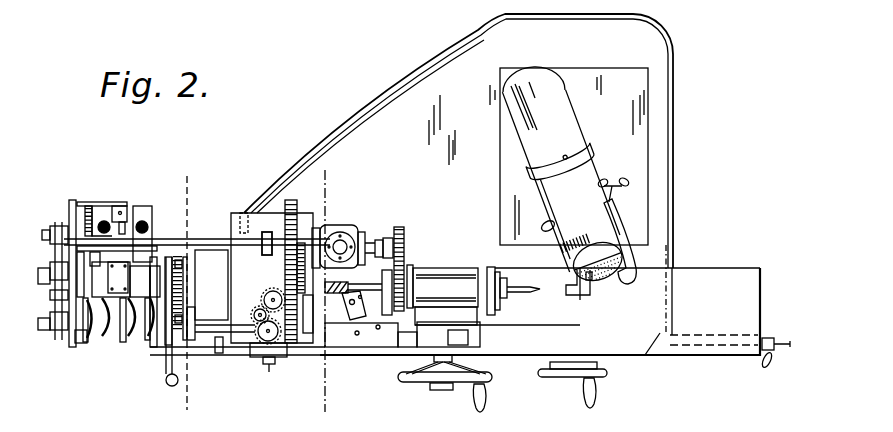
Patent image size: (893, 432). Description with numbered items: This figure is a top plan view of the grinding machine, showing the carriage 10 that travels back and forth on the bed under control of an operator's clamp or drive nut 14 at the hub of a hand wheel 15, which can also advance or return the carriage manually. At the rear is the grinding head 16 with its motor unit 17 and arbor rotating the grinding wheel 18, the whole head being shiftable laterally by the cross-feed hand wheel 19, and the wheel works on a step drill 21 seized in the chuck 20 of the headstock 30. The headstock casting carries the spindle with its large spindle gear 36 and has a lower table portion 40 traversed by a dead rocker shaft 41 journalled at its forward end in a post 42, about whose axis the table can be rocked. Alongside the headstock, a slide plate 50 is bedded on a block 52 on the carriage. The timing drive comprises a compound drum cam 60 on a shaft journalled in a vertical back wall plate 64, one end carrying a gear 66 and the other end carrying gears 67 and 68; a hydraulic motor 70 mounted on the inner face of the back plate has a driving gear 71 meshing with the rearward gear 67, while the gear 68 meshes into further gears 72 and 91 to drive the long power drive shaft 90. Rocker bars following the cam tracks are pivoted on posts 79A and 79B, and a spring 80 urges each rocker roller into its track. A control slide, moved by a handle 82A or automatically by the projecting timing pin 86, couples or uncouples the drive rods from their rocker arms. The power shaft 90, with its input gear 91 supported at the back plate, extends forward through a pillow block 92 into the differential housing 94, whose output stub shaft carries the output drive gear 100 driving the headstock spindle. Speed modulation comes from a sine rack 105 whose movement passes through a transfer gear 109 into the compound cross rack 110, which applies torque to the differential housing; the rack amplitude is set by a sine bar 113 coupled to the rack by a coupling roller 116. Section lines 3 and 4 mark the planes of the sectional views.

The carriage 10 is at (732, 314).
The clamp or drive nut 14 is at (447, 384).
The hand wheel 15 is at (491, 384).
The grinding head 16 is at (591, 175).
The motor unit 17 is at (567, 127).
The grinding wheel 18 is at (560, 256).
The cross-feed hand wheel 19 is at (557, 379).
The chuck 20 is at (502, 262).
The step drill 21 is at (514, 295).
The headstock 30 is at (468, 252).
The spindle gear 36 is at (420, 262).
The table portion 40 is at (572, 280).
The rocker shaft 41 is at (590, 296).
The post 42 is at (595, 278).
The slide plate 50 is at (345, 335).
The block 52 is at (402, 346).
The drum cam 60 is at (114, 340).
The back wall plate 64 is at (71, 202).
The gear 66 is at (180, 318).
The gear 67 is at (76, 345).
The drum cam gear 68 is at (48, 322).
The hydraulic motor 70 is at (121, 258).
The driving gear 71 is at (52, 293).
The gear 72 is at (40, 274).
The post 79A is at (100, 222).
The post 79B is at (150, 214).
The spring 80 is at (118, 206).
The handle 82A is at (166, 380).
The timing pin 86 is at (180, 264).
The power drive shaft 90 is at (201, 238).
The input gear 91 is at (50, 228).
The pillow block 92 is at (250, 246).
The differential housing 94 is at (329, 236).
The output drive gear 100 is at (398, 256).
The sine rack 105 is at (254, 357).
The transfer gear 109 is at (232, 280).
The compound cross rack 110 is at (287, 205).
The sine bar 113 is at (267, 376).
The coupling roller 116 is at (276, 361).
The section line 3 is at (190, 185).
The section line 4 is at (321, 192).